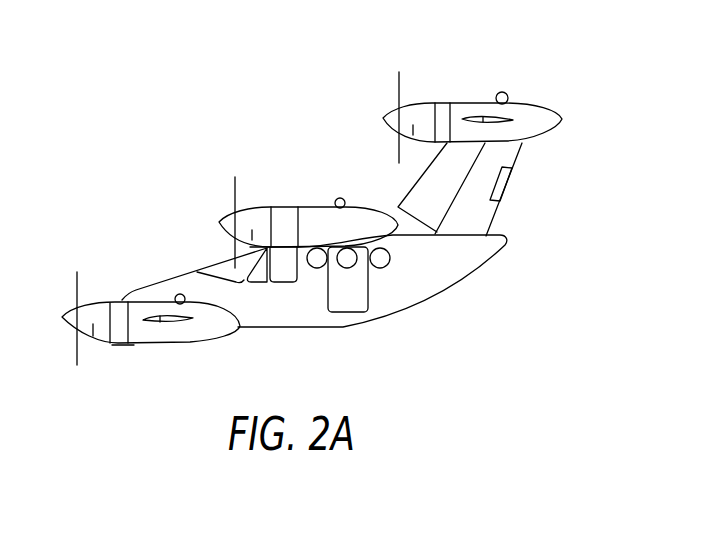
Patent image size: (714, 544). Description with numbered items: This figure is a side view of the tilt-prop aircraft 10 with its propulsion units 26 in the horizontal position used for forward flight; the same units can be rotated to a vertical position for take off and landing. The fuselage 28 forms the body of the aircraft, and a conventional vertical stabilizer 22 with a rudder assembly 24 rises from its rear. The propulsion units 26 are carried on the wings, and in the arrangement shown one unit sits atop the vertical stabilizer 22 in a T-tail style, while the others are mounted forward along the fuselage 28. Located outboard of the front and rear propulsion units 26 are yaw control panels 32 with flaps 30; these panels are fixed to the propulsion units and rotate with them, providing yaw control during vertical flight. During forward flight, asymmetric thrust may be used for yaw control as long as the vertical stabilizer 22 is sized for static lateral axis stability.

The aircraft 10 is at (213, 96).
The vertical stabilizer 22 is at (437, 195).
The rudder assembly 24 is at (484, 189).
The propulsion units 26 is at (122, 300).
The fuselage 28 is at (298, 308).
The flaps 30 is at (187, 321).
The yaw control panels 32 is at (160, 321).